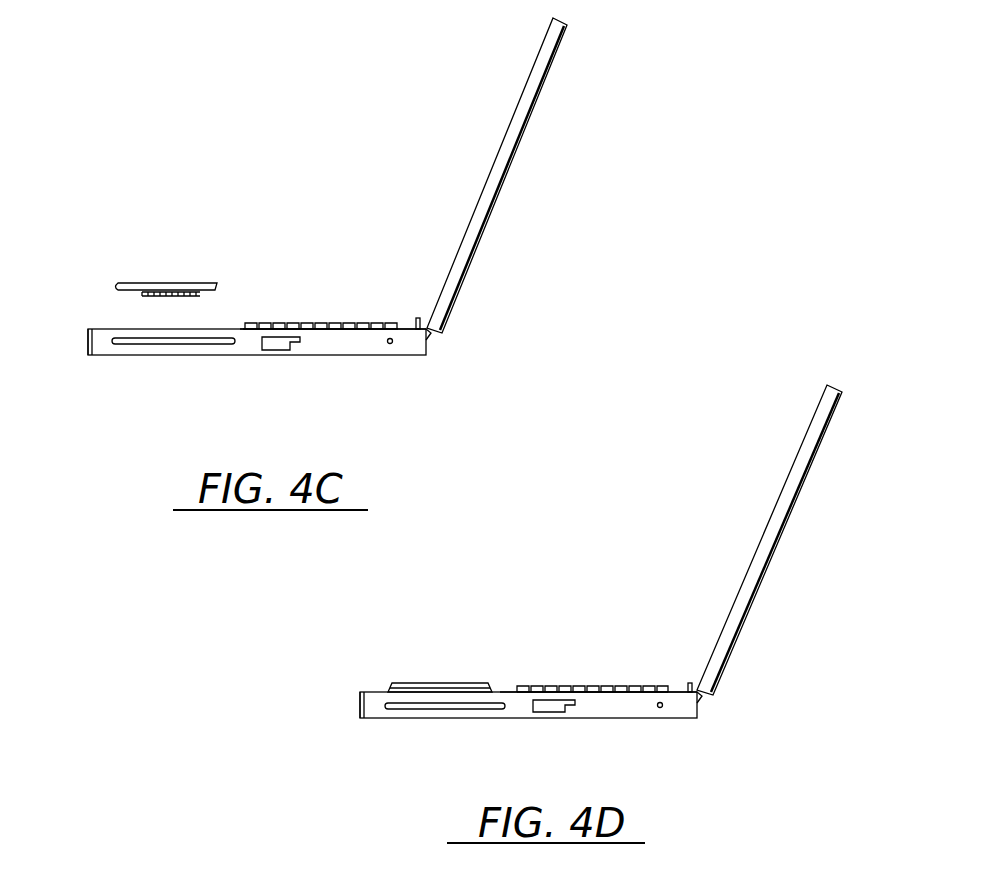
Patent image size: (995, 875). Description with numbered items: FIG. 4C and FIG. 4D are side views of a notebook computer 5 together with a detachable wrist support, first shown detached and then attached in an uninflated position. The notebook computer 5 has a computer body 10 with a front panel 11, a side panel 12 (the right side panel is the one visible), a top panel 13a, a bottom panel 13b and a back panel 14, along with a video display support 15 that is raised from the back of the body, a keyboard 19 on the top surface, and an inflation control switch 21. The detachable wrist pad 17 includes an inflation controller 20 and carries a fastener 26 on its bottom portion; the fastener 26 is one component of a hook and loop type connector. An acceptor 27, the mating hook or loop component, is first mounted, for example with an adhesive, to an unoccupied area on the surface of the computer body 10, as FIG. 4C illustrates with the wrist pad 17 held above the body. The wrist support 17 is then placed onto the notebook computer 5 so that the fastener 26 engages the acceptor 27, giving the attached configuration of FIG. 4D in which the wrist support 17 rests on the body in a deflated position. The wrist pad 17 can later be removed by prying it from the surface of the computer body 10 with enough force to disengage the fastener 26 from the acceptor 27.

In FIG. 4C, the notebook computer 5 is at (150, 365).
In FIG. 4D, the notebook computer 5 is at (418, 728).
In FIG. 4C, the computer body 10 is at (367, 357).
In FIG. 4D, the computer body 10 is at (640, 720).
In FIG. 4C, the front panel 11 is at (88, 345).
In FIG. 4D, the front panel 11 is at (360, 705).
In FIG. 4C, the side panel 12 is at (330, 357).
In FIG. 4D, the side panel 12 is at (608, 720).
In FIG. 4C, the top panel 13a is at (243, 325).
In FIG. 4D, the top panel 13a is at (520, 686).
In FIG. 4C, the bottom panel 13b is at (212, 357).
In FIG. 4D, the bottom panel 13b is at (478, 720).
In FIG. 4C, the back panel 14 is at (428, 340).
In FIG. 4D, the back panel 14 is at (698, 702).
In FIG. 4C, the video display support 15 is at (483, 237).
In FIG. 4D, the video display support 15 is at (757, 597).
In FIG. 4C, the wrist pad 17 is at (193, 283).
In FIG. 4D, the wrist pad 17 is at (462, 683).
In FIG. 4C, the keyboard 19 is at (310, 323).
In FIG. 4D, the keyboard 19 is at (583, 686).
In FIG. 4C, the inflation controller 20 is at (290, 357).
In FIG. 4D, the inflation controller 20 is at (560, 720).
In FIG. 4C, the inflation control switch 21 is at (418, 318).
In FIG. 4D, the inflation control switch 21 is at (690, 683).
In FIG. 4C, the fastener 26 is at (130, 300).
In FIG. 4D, the fastener 26 is at (385, 690).
In FIG. 4C, the acceptor 27 is at (122, 323).
In FIG. 4D, the acceptor 27 is at (418, 688).